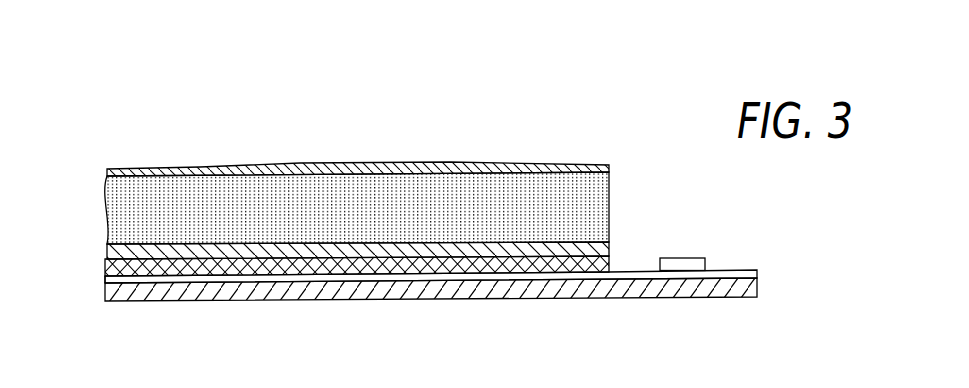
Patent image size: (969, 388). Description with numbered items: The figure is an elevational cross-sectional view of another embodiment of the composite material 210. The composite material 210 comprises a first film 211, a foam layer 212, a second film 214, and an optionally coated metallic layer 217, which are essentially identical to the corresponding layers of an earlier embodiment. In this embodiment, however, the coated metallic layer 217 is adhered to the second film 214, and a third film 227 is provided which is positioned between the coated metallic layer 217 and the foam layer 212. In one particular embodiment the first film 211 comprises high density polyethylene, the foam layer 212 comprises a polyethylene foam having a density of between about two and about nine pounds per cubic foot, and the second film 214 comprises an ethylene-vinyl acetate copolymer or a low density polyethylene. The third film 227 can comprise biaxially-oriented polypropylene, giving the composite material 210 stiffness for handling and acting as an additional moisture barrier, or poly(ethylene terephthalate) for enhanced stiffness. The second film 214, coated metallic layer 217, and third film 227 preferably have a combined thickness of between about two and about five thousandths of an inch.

The composite material 210 is at (438, 146).
The first film 211 is at (163, 160).
The foam layer 212 is at (607, 216).
The second film 214 is at (225, 305).
The coated metallic layer 217 is at (97, 277).
The third film 227 is at (102, 246).